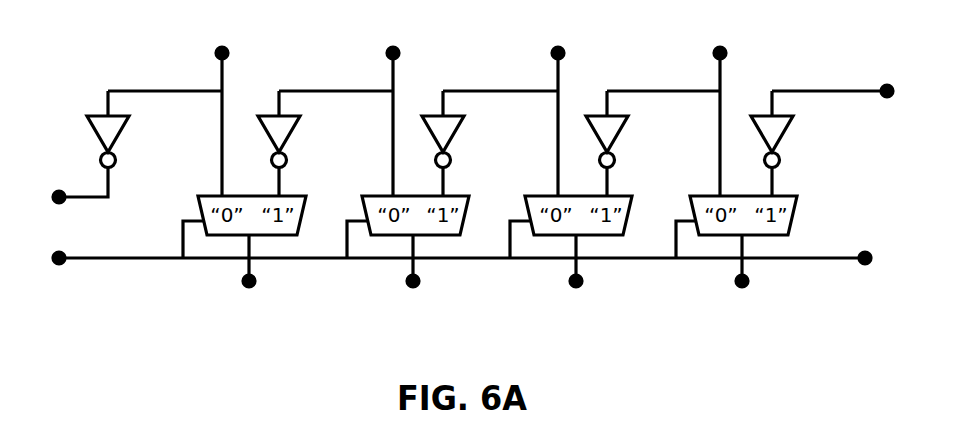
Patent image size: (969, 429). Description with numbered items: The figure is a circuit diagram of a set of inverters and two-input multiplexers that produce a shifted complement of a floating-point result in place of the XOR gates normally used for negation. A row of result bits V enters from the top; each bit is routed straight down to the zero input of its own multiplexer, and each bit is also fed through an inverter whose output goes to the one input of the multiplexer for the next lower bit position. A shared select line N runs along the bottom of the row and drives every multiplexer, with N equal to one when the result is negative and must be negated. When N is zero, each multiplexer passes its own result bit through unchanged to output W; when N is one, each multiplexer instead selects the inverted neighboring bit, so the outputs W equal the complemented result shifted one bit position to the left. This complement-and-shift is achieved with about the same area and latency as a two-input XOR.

The negation signal N is at (461, 263).